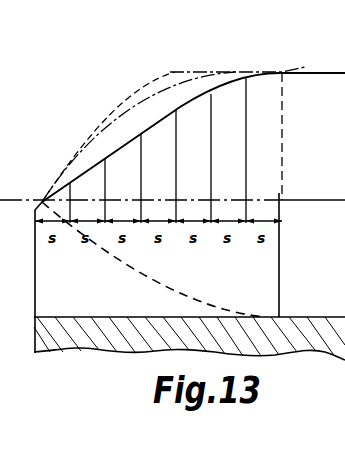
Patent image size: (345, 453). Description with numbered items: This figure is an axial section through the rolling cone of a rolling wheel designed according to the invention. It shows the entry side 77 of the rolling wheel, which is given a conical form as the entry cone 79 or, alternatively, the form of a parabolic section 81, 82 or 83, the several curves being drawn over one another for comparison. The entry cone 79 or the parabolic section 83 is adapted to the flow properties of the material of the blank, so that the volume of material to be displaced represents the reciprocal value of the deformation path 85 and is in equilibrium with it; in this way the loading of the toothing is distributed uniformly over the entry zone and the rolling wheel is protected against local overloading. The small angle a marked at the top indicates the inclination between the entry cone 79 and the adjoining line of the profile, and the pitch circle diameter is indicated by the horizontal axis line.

The entry side 77 is at (35, 280).
The entry cone 79 is at (200, 140).
The parabolic section 81 is at (97, 127).
The parabolic section 82 is at (125, 117).
The parabolic section 83 is at (182, 107).
The deformation path 85 is at (279, 280).
The angle a is at (293, 52).